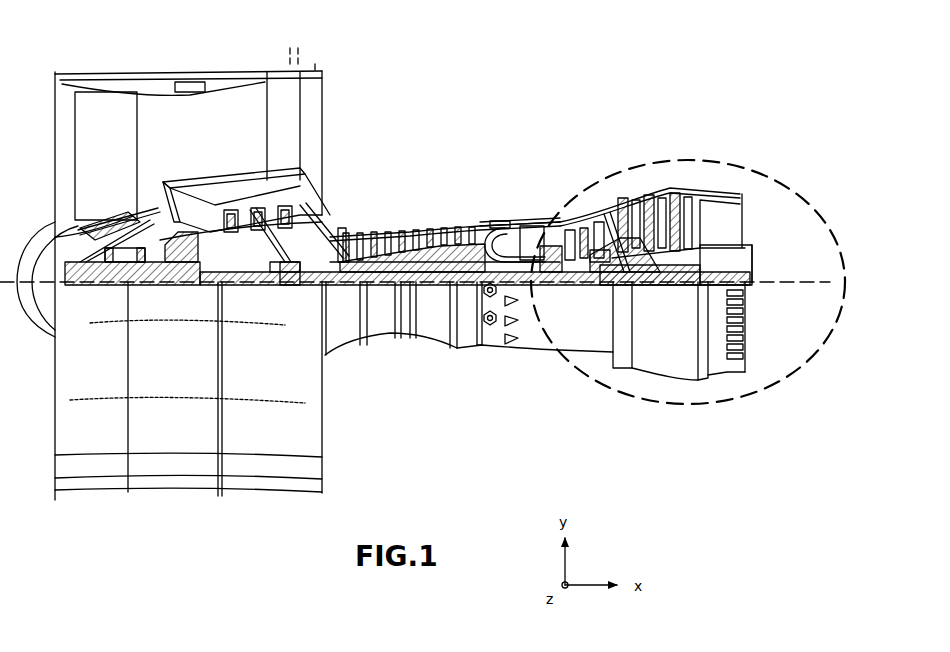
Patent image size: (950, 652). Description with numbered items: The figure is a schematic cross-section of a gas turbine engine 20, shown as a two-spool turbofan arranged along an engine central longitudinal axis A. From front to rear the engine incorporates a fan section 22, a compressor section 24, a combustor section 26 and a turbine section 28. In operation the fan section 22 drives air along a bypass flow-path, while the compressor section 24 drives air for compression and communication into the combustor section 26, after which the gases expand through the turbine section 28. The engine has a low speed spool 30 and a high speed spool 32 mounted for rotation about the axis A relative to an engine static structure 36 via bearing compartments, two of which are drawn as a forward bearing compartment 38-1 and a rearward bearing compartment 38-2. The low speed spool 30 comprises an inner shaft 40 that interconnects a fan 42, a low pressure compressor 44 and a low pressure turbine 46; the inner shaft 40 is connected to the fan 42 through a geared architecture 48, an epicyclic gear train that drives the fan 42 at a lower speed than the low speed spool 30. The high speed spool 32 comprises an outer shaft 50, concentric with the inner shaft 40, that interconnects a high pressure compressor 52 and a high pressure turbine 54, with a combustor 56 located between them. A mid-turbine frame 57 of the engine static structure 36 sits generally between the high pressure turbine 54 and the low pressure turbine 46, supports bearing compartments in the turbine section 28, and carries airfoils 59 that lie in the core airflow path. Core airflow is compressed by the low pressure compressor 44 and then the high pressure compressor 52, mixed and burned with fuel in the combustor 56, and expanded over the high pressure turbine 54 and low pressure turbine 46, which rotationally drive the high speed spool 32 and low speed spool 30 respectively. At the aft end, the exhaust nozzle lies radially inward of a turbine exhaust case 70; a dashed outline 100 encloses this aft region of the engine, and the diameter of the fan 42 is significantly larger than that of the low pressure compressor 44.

The gas turbine engine 20 is at (524, 106).
The fan section 22 is at (136, 70).
The compressor section 24 is at (357, 216).
The combustor section 26 is at (519, 208).
The turbine section 28 is at (632, 176).
The low speed spool 30 is at (435, 290).
The high speed spool 32 is at (458, 246).
The engine static structure 36 is at (466, 350).
The bearing compartment 38-1 is at (105, 268).
The bearing compartment 38-2 is at (296, 270).
The inner shaft 40 is at (334, 312).
The fan 42 is at (122, 166).
The low pressure compressor section 44 is at (302, 178).
The low pressure turbine section 46 is at (660, 192).
The geared architecture 48 is at (192, 270).
The outer shaft 50 is at (531, 268).
The high pressure compressor 52 is at (412, 232).
The high pressure turbine section 54 is at (568, 212).
The combustor 56 is at (506, 234).
The mid-turbine frame 57 is at (604, 212).
The airfoils 59 is at (612, 258).
The turbine exhaust case 70 is at (708, 388).
The region of interest 100 is at (788, 184).
The engine central longitudinal axis A is at (811, 282).